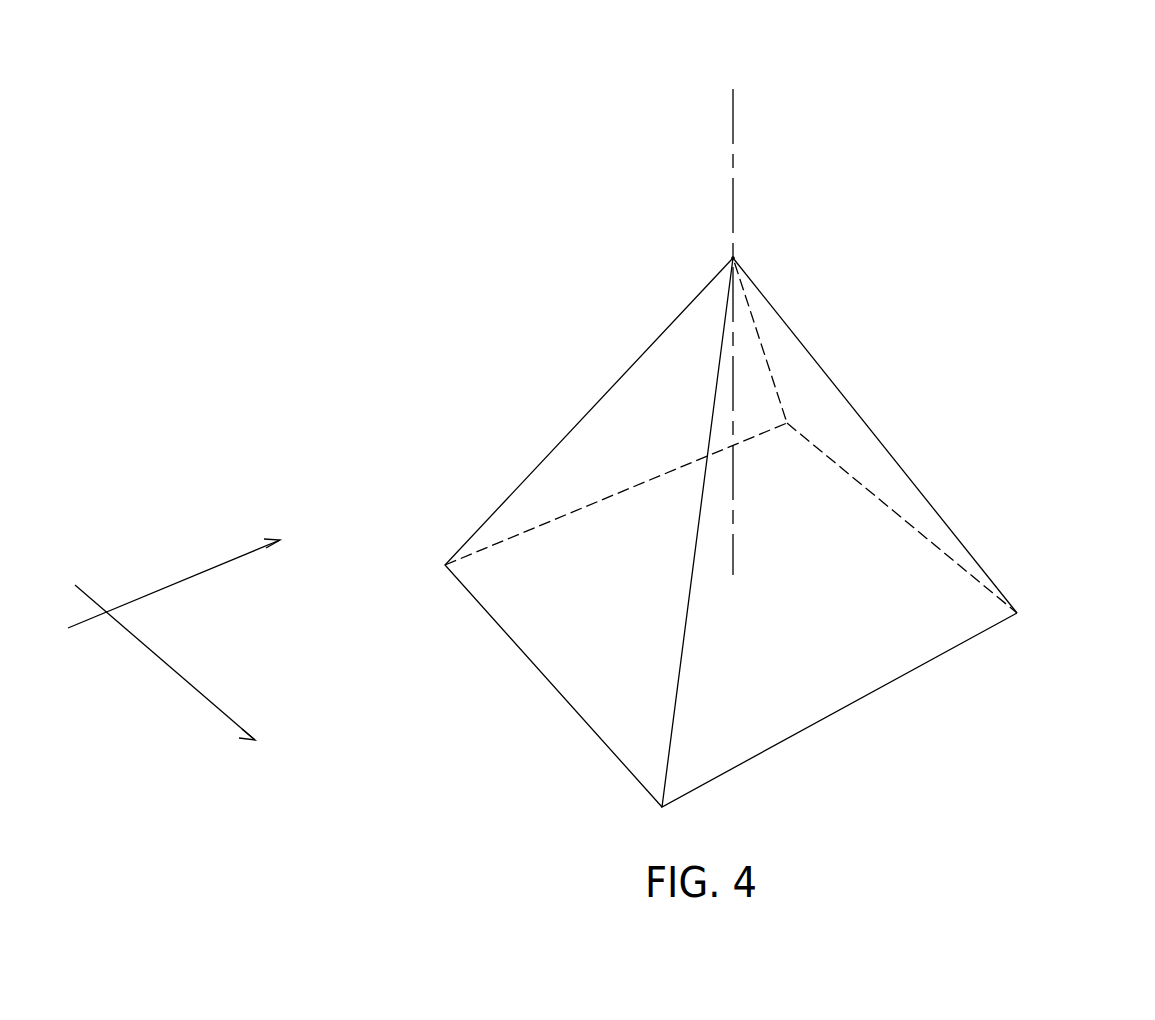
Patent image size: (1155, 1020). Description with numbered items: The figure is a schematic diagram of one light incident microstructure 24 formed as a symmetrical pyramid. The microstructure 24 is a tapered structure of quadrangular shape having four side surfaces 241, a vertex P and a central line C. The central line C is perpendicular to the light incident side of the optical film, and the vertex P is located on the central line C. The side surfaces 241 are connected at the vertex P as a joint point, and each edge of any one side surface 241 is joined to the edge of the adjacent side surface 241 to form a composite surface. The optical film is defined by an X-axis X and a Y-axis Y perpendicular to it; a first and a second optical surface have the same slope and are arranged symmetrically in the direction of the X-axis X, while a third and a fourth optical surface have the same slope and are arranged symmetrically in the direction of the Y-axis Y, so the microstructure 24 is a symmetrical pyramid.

The light incident microstructure 24 is at (768, 485).
The side surfaces 241 is at (768, 532).
The vertex P is at (733, 258).
The central line C is at (733, 91).
The X-axis X is at (182, 675).
The Y-axis Y is at (187, 575).